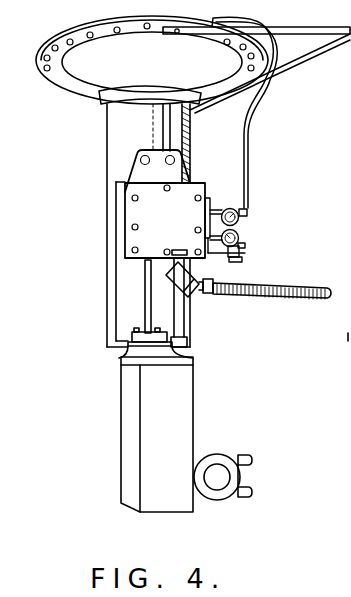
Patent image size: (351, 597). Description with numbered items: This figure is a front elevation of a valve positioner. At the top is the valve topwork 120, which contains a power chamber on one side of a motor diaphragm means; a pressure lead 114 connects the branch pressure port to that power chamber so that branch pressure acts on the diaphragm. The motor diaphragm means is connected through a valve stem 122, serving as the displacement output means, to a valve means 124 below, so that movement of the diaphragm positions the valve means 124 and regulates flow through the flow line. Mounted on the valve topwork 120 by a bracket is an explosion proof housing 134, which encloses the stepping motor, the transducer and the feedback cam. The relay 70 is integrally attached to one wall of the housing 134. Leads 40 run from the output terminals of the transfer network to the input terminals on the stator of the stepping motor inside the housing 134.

The valve topwork 120 is at (170, 60).
The pressure lead 114 is at (277, 74).
The explosion proof housing 134 is at (173, 218).
The relay 70 is at (204, 220).
The valve stem 122 is at (147, 295).
The leads 40 is at (272, 283).
The valve means 124 is at (168, 421).